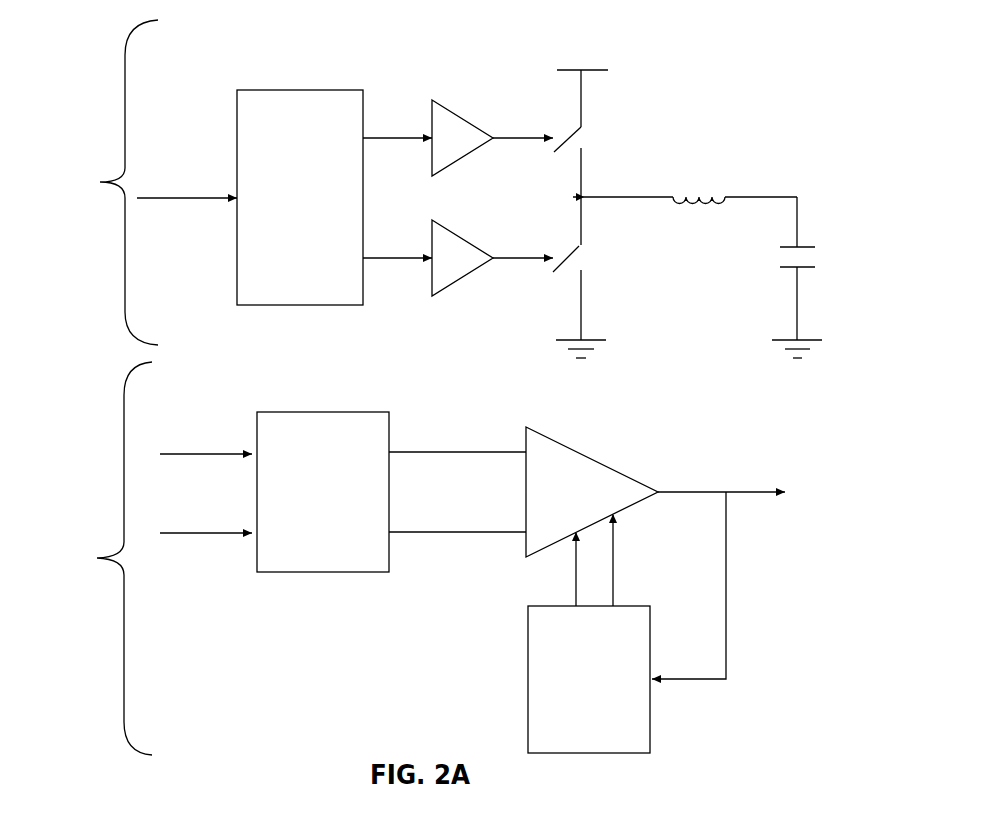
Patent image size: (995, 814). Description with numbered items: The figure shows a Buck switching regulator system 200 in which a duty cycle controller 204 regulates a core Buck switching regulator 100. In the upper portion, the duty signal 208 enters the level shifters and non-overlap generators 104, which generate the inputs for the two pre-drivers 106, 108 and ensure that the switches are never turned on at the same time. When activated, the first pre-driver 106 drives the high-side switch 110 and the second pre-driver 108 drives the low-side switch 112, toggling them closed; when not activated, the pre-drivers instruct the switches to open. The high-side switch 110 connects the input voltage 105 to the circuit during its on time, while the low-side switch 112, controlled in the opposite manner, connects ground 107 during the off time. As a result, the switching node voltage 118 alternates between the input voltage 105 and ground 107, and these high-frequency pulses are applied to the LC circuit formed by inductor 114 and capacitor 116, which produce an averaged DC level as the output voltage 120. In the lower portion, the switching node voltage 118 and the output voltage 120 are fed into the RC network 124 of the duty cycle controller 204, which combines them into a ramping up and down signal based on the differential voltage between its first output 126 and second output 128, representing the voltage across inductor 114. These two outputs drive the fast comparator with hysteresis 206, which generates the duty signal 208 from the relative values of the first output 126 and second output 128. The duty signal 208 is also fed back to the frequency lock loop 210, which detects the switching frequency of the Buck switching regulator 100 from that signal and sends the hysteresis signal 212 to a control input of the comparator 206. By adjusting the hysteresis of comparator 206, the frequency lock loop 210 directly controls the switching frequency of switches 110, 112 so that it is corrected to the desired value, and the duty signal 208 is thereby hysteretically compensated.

The Buck switching regulator 100 is at (100, 182).
The level shifters and non-overlap generators 104 is at (277, 89).
The input voltage VIN 105 is at (597, 53).
The pre-driver 106 is at (487, 80).
The ground 107 is at (606, 350).
The pre-driver 108 is at (468, 240).
The switch SW1 110 is at (620, 125).
The switch SW2 112 is at (640, 247).
The inductor L 114 is at (712, 230).
The capacitor C 116 is at (825, 243).
The switching node voltage LX 118 is at (560, 190).
The output voltage VOUT 120 is at (760, 177).
The RC network 124 is at (318, 573).
The output V1 126 is at (447, 432).
The output V2 128 is at (447, 512).
The Buck switching regulator system 200 is at (814, 50).
The duty cycle controller 204 is at (97, 558).
The fast comparator with hysteresis 206 is at (611, 479).
The duty signal 208 is at (191, 170).
The frequency lock loop (FLL) 210 is at (653, 638).
The hysteresis control signal VHYS 212 is at (645, 566).